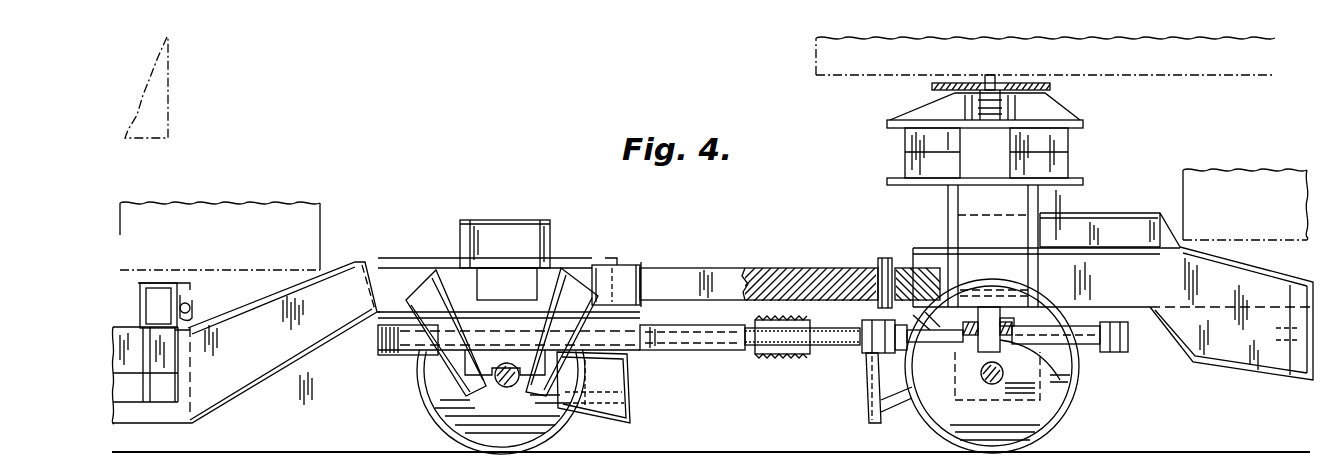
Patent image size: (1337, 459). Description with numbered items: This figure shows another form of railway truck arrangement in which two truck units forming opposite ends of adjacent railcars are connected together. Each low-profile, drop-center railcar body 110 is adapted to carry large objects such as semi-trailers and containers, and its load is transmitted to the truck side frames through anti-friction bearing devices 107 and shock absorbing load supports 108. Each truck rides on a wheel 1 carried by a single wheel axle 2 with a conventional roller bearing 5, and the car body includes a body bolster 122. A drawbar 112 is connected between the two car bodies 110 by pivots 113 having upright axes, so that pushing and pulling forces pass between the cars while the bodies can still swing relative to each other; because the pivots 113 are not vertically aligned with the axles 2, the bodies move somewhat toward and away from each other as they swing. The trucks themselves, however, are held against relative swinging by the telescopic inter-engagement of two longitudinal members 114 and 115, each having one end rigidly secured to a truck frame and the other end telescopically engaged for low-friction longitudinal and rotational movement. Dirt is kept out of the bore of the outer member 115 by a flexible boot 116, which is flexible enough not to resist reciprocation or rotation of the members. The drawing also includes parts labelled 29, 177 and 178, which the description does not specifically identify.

The wheel 1 is at (445, 391).
The axle 2 is at (507, 387).
The roller bearing 5 is at (445, 415).
The strut 29 is at (995, 303).
The anti-friction bearing device 107 is at (528, 275).
The shock absorbing load support 108 is at (573, 284).
The railcar body 110 is at (521, 214).
The drawbar 112 is at (723, 282).
The pivot 113 is at (614, 261).
The longitudinal member 114 is at (845, 348).
The outer longitudinal member 115 is at (678, 345).
The flexible boot 116 is at (788, 357).
The body bolster 122 is at (398, 352).
The pivot arm 177 is at (1017, 342).
The pivot pin 178 is at (1010, 328).